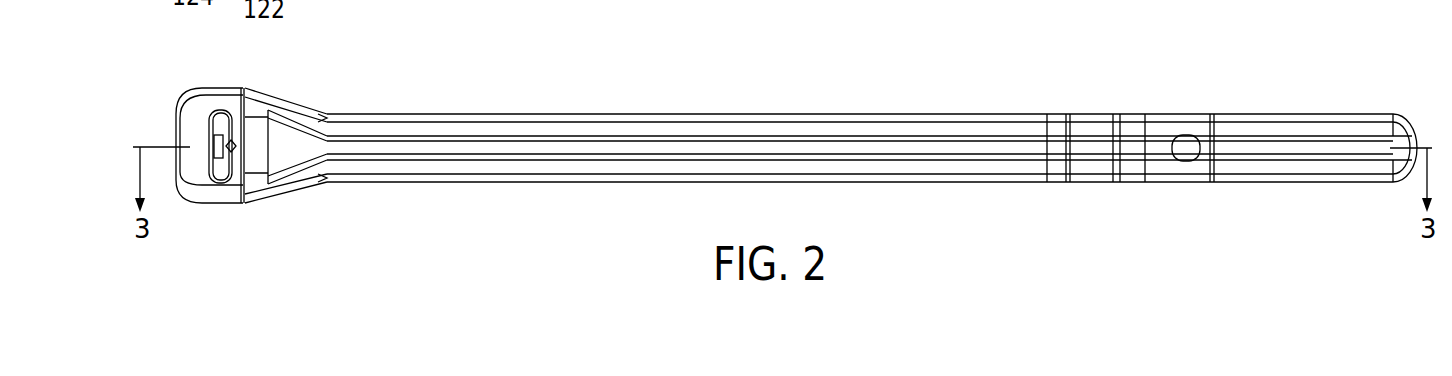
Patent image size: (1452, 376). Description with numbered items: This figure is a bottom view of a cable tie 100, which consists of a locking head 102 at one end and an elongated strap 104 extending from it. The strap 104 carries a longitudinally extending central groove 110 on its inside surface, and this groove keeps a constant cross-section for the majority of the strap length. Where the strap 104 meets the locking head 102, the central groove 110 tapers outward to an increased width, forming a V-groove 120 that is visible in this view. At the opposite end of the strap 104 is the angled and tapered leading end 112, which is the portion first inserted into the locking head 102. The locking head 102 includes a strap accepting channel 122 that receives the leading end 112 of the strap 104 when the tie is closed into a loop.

The cable tie 100 is at (830, 88).
The locking head 102 is at (222, 204).
The strap 104 is at (628, 114).
The central groove 110 is at (545, 150).
The leading end 112 is at (1278, 128).
The V-groove 120 is at (288, 138).
The strap accepting channel 122 is at (232, 108).